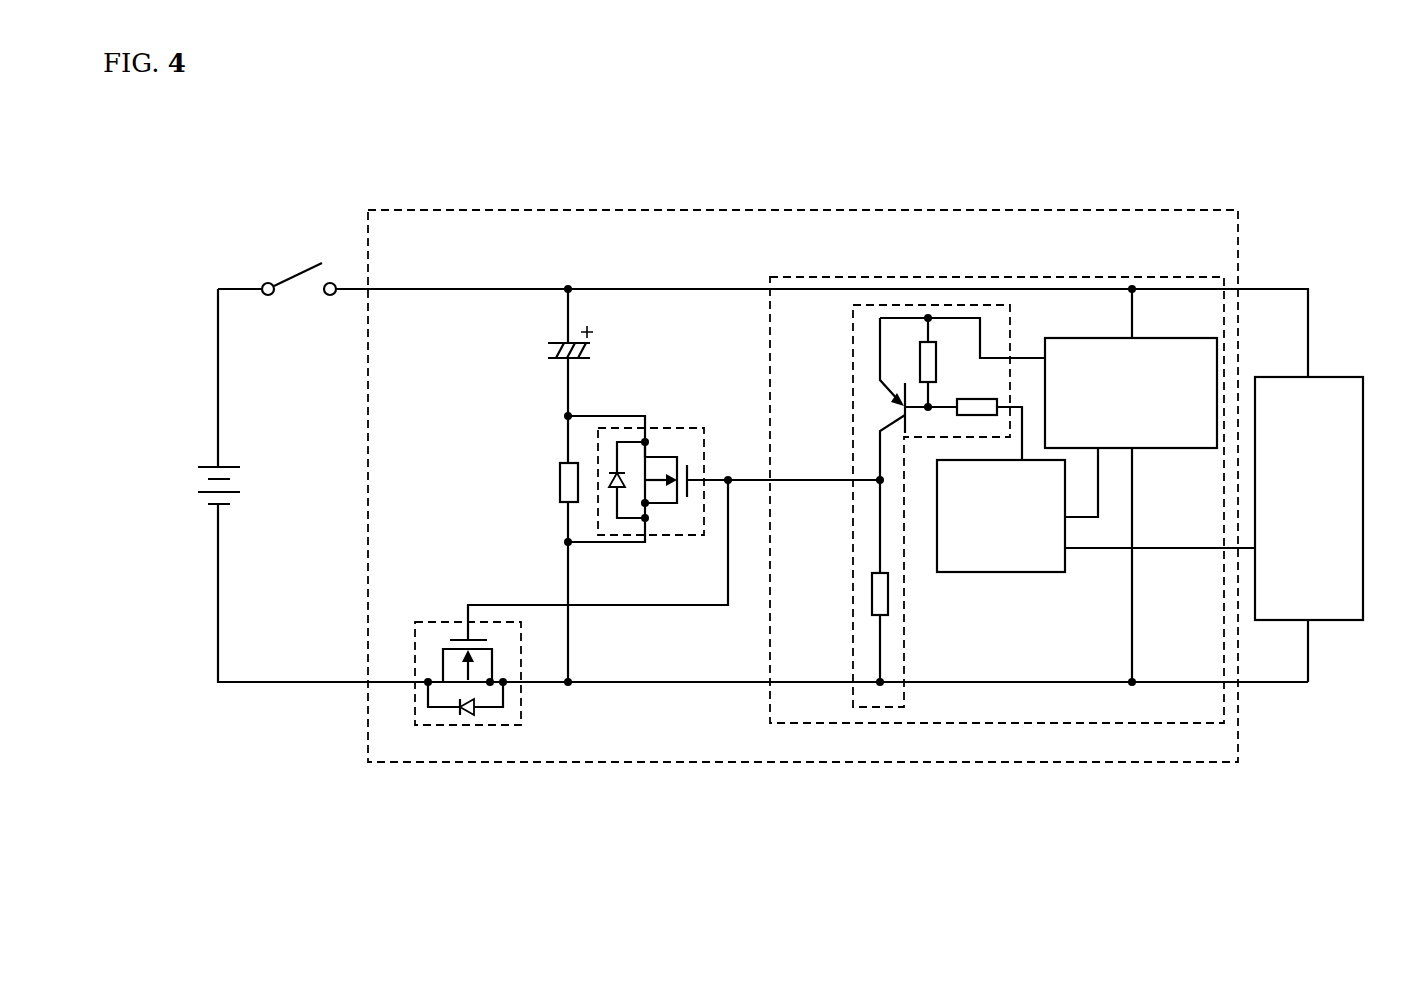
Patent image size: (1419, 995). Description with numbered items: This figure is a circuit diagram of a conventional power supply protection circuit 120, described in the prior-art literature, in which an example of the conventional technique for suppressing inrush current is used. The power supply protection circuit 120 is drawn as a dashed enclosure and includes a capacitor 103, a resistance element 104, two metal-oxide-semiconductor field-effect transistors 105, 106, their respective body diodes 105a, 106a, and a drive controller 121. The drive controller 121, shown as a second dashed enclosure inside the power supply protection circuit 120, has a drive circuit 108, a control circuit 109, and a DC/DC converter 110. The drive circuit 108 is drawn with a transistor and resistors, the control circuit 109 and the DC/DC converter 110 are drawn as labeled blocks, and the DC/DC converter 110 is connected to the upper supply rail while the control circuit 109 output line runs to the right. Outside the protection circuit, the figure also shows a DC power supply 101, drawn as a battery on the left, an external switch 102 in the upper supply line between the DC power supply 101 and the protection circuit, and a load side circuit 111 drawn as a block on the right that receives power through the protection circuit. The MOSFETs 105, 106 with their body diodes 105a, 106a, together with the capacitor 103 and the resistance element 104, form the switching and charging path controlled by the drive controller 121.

The DC power supply 101 is at (222, 466).
The external switch 102 is at (303, 267).
The capacitor 103 is at (548, 343).
The resistance element 104 is at (560, 485).
The metal-oxide-semiconductor field-effect transistor 105 is at (660, 476).
The body diode 105a is at (616, 488).
The metal-oxide-semiconductor field-effect transistor 106 is at (516, 641).
The body diode 106a is at (470, 708).
The drive circuit 108 is at (853, 594).
The control circuit 109 is at (970, 573).
The DC/DC converter 110 is at (1140, 449).
The load side circuit 111 is at (1325, 377).
The power supply protection circuit 120 is at (810, 210).
The drive controller 121 is at (1010, 277).